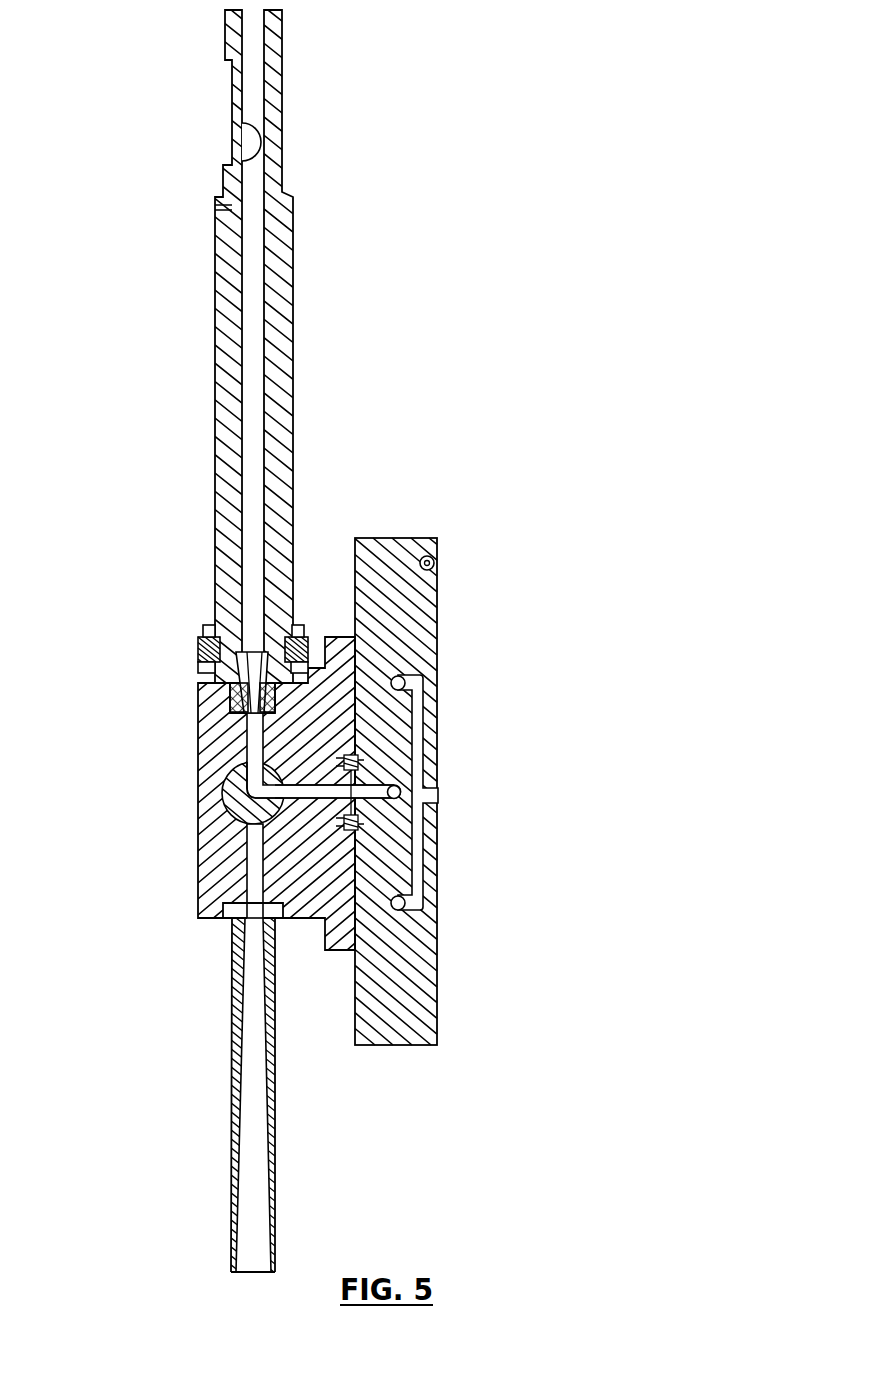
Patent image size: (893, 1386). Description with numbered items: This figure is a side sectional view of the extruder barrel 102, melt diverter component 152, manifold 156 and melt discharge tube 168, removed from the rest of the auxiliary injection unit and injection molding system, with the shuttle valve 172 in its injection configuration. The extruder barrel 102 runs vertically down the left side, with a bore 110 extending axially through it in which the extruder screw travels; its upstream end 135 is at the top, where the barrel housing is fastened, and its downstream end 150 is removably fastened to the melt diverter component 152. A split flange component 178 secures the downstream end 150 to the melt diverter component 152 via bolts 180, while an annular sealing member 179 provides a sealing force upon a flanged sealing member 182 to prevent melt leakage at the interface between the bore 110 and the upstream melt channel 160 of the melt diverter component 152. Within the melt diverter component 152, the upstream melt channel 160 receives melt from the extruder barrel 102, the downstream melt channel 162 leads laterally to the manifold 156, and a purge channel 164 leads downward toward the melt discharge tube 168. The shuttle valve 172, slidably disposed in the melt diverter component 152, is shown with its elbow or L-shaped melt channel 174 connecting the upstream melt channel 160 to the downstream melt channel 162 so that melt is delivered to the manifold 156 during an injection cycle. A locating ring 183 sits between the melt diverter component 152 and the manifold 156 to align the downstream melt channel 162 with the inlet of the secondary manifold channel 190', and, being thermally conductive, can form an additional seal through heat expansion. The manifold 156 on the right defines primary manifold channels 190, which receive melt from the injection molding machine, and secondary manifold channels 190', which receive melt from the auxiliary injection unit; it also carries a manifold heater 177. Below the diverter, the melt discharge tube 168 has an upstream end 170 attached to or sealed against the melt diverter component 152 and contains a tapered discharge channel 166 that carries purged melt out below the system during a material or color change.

The extruder barrel 102 is at (232, 270).
The bore 110 is at (246, 536).
The upstream end 135 is at (276, 68).
The downstream end 150 is at (199, 672).
The melt diverter component 152 is at (215, 848).
The manifold 156 is at (417, 610).
The upstream melt channel 160 is at (250, 742).
The downstream melt channel 162 is at (312, 800).
The purge channel 164 is at (252, 885).
The tapered discharge channel 166 is at (248, 1080).
The melt discharge tube 168 is at (272, 993).
The upstream end 170 is at (228, 920).
The shuttle valve 172 is at (230, 800).
The L-shaped melt channel 174 is at (222, 788).
The manifold heater 177 is at (438, 565).
The split flange component 178 is at (198, 650).
The annular sealing member 179 is at (230, 712).
The bolts 180 is at (207, 628).
The flanged sealing member 182 is at (300, 655).
The locating ring 183 is at (357, 823).
The primary manifold channels 190 is at (462, 792).
The secondary manifold channels 190' is at (329, 748).